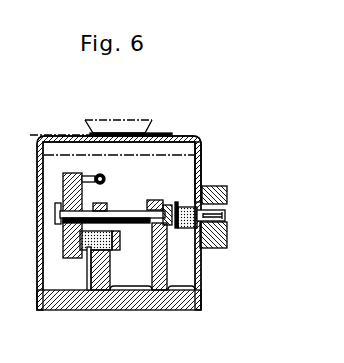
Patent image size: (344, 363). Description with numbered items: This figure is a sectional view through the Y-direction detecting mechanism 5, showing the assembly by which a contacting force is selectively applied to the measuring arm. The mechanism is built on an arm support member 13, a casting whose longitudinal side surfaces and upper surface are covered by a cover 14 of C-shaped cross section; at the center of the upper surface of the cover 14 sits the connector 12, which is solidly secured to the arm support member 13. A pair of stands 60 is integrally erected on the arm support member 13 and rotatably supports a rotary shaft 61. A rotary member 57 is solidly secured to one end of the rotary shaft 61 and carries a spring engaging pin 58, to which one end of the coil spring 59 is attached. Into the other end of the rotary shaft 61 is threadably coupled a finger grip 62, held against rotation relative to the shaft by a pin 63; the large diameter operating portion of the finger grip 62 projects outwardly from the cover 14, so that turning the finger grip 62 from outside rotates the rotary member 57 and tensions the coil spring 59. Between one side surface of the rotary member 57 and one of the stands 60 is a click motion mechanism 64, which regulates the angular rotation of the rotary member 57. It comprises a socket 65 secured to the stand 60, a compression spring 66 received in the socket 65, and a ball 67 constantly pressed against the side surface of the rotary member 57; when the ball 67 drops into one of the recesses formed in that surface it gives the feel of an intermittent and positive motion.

The Y-direction detecting mechanism 5 is at (202, 134).
The connector 12 is at (147, 116).
The arm support member 13 is at (126, 302).
The cover 14 is at (201, 167).
The rotary member 57 is at (62, 198).
The spring engaging pin 58 is at (90, 178).
The coil spring 59 is at (105, 203).
The stands 60 is at (113, 277).
The rotary shaft 61 is at (155, 204).
The finger grip 62 is at (224, 196).
The pin 63 is at (178, 207).
The click motion mechanism 64 is at (88, 262).
The socket 65 is at (119, 243).
The compression spring 66 is at (87, 259).
The ball 67 is at (80, 242).